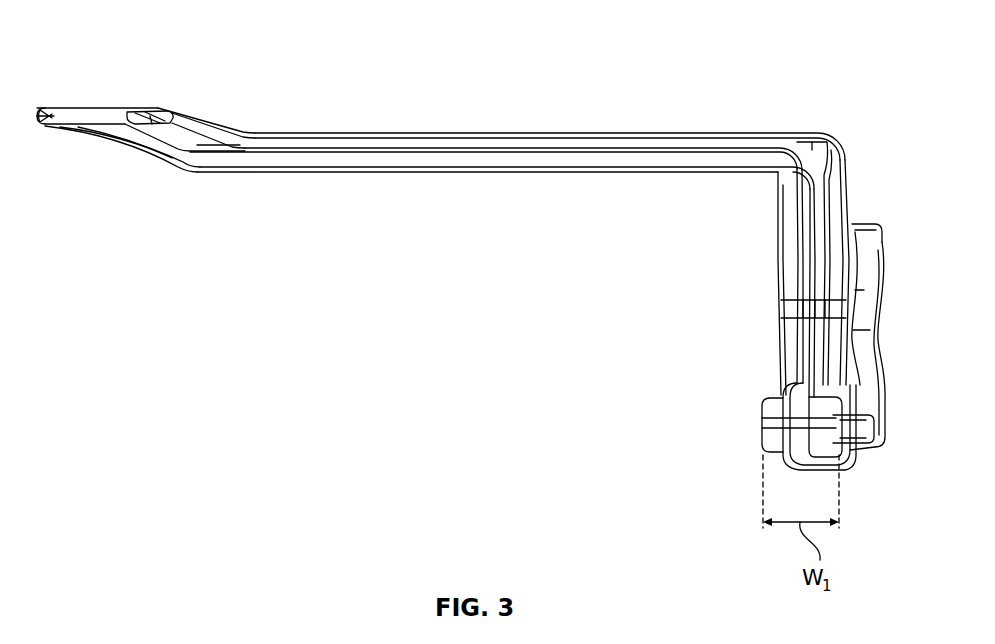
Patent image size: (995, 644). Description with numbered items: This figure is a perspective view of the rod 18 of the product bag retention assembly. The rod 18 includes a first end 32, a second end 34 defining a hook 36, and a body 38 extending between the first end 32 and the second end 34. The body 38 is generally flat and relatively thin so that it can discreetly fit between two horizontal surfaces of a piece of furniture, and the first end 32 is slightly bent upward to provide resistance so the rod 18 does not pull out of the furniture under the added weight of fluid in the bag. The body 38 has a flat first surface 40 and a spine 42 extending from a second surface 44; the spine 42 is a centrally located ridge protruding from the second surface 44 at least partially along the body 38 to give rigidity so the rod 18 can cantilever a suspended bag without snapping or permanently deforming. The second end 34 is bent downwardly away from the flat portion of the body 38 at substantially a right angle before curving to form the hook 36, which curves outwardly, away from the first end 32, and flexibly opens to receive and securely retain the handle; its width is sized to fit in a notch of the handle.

The rod 18 is at (100, 56).
The first end 32 is at (68, 118).
The second end 34 is at (833, 205).
The hook 36 is at (887, 357).
The body 38 is at (470, 141).
The flat first surface 40 is at (347, 131).
The spine 42 is at (400, 160).
The second surface 44 is at (242, 150).